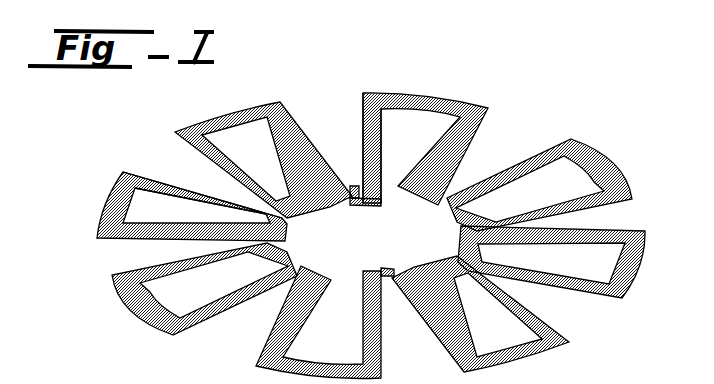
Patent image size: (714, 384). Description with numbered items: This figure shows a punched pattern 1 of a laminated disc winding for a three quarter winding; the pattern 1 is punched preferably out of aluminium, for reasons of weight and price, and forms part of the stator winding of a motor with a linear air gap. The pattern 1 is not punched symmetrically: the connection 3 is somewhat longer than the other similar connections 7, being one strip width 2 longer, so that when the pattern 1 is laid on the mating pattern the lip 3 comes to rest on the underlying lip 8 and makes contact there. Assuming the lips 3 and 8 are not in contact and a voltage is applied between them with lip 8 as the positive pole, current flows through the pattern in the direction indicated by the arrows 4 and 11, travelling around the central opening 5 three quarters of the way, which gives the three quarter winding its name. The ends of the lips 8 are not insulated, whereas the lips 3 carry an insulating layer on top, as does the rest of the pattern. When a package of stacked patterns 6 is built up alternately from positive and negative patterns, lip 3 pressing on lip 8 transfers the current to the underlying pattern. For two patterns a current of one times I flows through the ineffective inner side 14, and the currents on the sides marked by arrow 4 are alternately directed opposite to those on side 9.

The punched pattern 1 is at (412, 96).
The strip width 2 is at (368, 112).
The connection (lip) 3 is at (354, 186).
The arrow (current direction) 4 is at (550, 200).
The opening 5 is at (152, 203).
The stacked patterns 6 is at (263, 107).
The connection 7 is at (302, 281).
The lip 8 is at (372, 207).
The side (current direction) 9 is at (117, 198).
The arrow (current direction) 11 is at (548, 278).
The inner ineffective side 14 is at (316, 268).